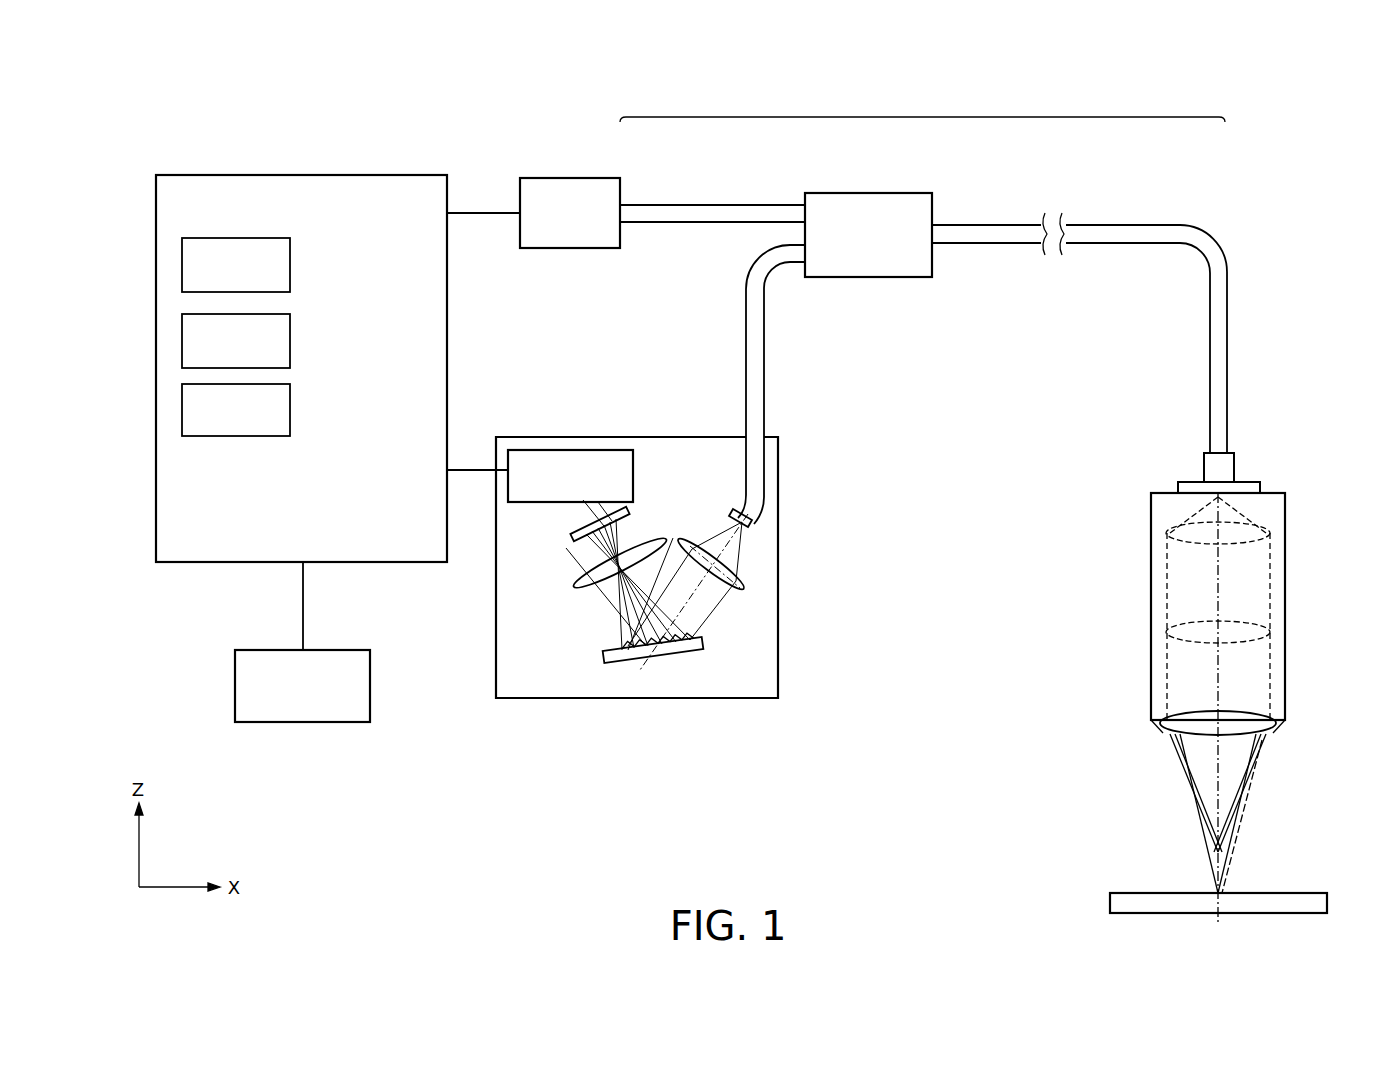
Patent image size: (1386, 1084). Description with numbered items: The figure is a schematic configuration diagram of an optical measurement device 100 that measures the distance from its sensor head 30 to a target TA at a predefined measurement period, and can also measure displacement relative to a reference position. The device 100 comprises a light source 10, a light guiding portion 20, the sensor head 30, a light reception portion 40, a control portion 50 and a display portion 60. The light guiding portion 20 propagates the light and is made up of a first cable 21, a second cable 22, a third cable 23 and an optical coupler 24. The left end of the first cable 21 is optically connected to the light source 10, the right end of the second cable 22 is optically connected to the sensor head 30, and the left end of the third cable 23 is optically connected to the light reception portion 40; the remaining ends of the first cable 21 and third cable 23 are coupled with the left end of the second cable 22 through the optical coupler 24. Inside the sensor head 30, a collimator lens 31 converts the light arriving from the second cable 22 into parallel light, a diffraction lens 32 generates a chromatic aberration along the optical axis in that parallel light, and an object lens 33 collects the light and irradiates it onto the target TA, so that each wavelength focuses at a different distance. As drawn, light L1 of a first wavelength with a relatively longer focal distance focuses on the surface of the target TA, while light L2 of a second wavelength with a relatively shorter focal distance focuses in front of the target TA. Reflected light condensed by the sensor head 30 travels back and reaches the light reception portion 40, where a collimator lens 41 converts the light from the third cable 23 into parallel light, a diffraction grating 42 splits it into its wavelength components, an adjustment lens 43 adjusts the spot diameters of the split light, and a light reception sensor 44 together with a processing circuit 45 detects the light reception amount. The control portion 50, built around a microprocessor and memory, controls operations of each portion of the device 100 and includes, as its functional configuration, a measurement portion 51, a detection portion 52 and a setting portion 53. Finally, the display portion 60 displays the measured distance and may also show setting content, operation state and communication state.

The optical measurement device 100 is at (1303, 83).
The light source 10 is at (565, 178).
The light guiding portion 20 is at (922, 103).
The first cable 21 is at (706, 204).
The second cable 22 is at (1162, 224).
The third cable 23 is at (765, 363).
The optical coupler 24 is at (868, 193).
The sensor head 30 is at (1150, 492).
The collimator lens 31 is at (1287, 530).
The diffraction lens 32 is at (1287, 630).
The object lens 33 is at (1287, 720).
The light reception portion 40 is at (658, 436).
The collimator lens 41 is at (750, 585).
The diffraction grating 42 is at (705, 655).
The adjustment lens 43 is at (587, 586).
The light reception sensor 44 is at (574, 534).
The processing circuit 45 is at (633, 480).
The control portion 50 is at (297, 173).
The measurement portion 51 is at (290, 265).
The detection portion 52 is at (290, 340).
The setting portion 53 is at (290, 410).
The display portion 60 is at (370, 682).
The light with a first wavelength L1 is at (1207, 856).
The light with a second wavelength L2 is at (1204, 830).
The target TA is at (1110, 903).